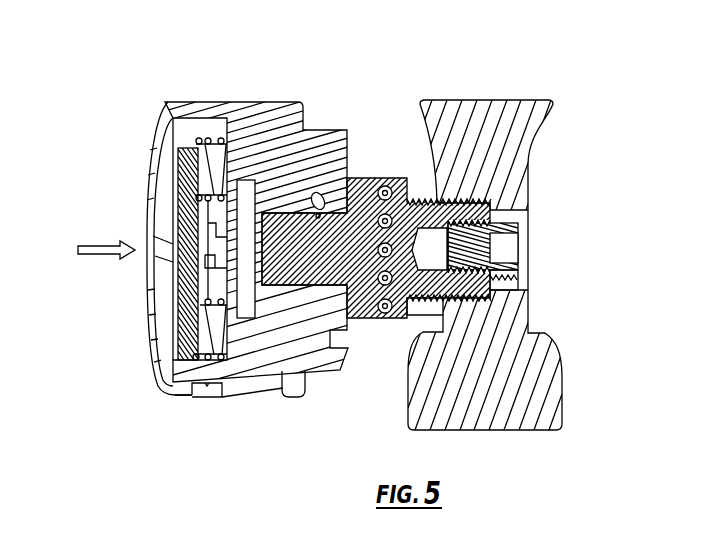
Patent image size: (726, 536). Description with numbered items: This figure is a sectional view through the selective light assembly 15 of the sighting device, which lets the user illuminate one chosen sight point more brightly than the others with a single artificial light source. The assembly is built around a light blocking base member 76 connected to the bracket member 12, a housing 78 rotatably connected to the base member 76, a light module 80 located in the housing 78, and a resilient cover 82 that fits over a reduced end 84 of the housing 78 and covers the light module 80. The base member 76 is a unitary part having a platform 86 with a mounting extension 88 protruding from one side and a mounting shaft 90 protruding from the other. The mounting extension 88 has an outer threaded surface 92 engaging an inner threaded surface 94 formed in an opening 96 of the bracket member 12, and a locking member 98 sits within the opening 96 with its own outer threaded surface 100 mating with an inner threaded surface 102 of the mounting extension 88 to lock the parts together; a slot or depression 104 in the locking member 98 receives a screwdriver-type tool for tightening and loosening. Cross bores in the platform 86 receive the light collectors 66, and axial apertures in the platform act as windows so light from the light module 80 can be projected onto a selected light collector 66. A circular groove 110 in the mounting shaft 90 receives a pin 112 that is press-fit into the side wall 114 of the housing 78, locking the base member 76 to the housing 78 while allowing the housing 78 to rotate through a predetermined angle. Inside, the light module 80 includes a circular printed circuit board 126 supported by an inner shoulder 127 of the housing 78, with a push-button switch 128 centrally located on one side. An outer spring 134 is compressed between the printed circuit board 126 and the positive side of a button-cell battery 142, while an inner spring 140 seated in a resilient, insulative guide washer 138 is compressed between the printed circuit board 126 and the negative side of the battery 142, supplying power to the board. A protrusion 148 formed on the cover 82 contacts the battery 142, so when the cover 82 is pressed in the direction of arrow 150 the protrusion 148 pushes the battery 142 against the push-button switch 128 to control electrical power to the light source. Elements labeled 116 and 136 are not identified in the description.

The bracket member 12 is at (489, 242).
The selective light assembly 15 is at (258, 100).
The light collectors 66 is at (429, 249).
The light blocking base member 76 is at (376, 196).
The housing 78 is at (263, 393).
The light module 80 is at (168, 167).
The cover 82 is at (155, 238).
The reduced end 84 is at (193, 396).
The platform 86 is at (387, 177).
The mounting extension 88 is at (460, 198).
The mounting shaft 90 is at (265, 170).
The outer threaded surface 92 is at (434, 200).
The inner threaded surface 94 is at (481, 203).
The opening 96 is at (528, 210).
The locking member 98 is at (518, 272).
The outer threaded surface 100 is at (518, 286).
The inner threaded surface 102 is at (397, 320).
The slot or depression 104 is at (508, 252).
The circular groove 110 is at (278, 213).
The pin 112 is at (317, 195).
The side wall 114 is at (319, 195).
The tab 116 is at (284, 396).
The printed circuit board 126 is at (237, 282).
The inner shoulder 127 is at (168, 335).
The push-button switch 128 is at (165, 290).
The outer spring 134 is at (207, 165).
The cap wall 136 is at (173, 203).
The guide washer 138 is at (160, 135).
The inner spring 140 is at (237, 333).
The button-cell battery 142 is at (177, 245).
The protrusion 148 is at (158, 253).
The arrow 150 is at (102, 256).